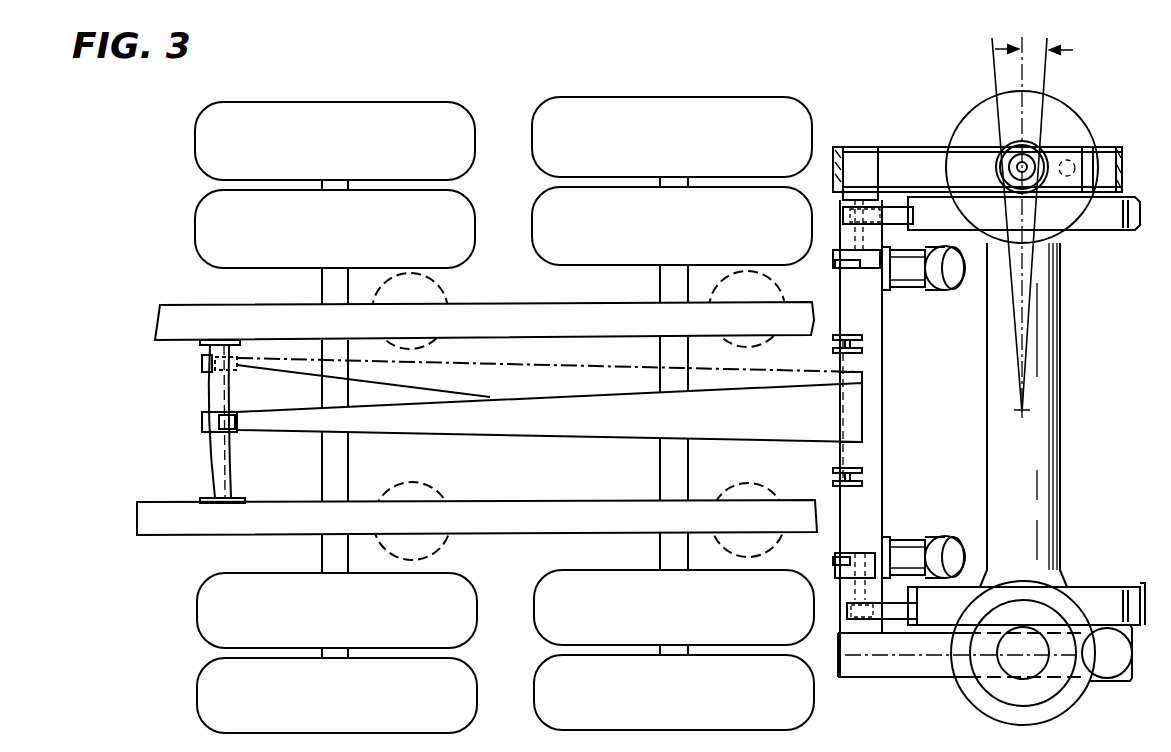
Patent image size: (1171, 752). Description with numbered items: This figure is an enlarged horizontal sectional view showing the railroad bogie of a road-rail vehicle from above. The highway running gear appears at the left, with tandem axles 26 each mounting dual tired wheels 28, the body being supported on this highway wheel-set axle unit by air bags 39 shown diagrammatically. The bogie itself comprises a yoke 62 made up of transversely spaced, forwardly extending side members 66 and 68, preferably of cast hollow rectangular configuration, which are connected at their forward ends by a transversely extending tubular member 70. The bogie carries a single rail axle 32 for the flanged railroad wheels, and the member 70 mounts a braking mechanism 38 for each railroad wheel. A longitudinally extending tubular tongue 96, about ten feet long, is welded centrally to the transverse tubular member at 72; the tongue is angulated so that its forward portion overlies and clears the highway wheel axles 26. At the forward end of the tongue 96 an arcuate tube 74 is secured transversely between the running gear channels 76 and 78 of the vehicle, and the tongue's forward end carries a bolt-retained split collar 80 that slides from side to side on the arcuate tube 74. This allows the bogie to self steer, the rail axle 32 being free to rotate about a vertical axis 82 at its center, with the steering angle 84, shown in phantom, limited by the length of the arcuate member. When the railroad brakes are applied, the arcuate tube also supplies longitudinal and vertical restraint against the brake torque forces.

The tandem axles 26 is at (326, 277).
The dual tired wheels 28 is at (387, 110).
The single axle 32 is at (1052, 300).
The braking mechanism 38 is at (910, 290).
The air bags 39 is at (420, 292).
The yoke 62 is at (1094, 368).
The side member 66 is at (921, 150).
The side member 68 is at (918, 668).
The transversely extending tubular member 70 is at (882, 446).
The weld 72 is at (864, 385).
The arcuate tube 74 is at (228, 466).
The running gear channel 76 is at (230, 323).
The running gear channel 78 is at (192, 534).
The split collar 80 is at (212, 416).
The vertical axis 82 is at (1026, 411).
The steering angle 84 is at (1035, 52).
The tongue 96 is at (583, 392).